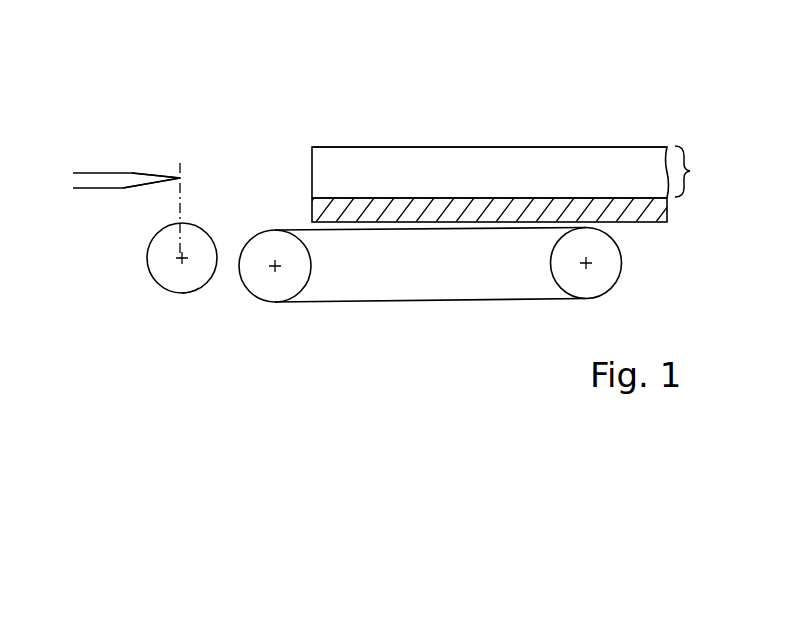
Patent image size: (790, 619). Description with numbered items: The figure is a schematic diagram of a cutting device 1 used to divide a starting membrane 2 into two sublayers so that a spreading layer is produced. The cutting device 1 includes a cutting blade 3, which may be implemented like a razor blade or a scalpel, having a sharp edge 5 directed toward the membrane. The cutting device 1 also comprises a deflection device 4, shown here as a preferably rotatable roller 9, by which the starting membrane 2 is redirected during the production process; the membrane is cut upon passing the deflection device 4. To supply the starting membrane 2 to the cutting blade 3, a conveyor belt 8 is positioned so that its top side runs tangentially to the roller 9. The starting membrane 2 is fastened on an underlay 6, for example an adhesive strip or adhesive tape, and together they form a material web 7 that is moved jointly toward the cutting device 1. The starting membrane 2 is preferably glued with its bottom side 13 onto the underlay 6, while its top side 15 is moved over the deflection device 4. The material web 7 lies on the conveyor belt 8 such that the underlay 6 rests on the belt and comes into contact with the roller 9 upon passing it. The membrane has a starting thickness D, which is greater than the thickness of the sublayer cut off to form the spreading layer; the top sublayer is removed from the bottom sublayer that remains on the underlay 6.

The cutting device 1 is at (196, 98).
The starting membrane 2 is at (506, 165).
The cutting blade 3 is at (102, 183).
The deflection device 4 is at (150, 292).
The sharp edge 5 is at (160, 175).
The underlay 6 is at (630, 210).
The material web 7 is at (465, 170).
The conveyor belt 8 is at (550, 315).
The roller 9 is at (185, 275).
The bottom side of the starting membrane 13 is at (348, 198).
The top side of the starting membrane 15 is at (392, 147).
The starting thickness D is at (693, 171).